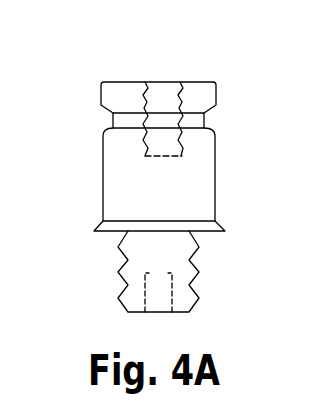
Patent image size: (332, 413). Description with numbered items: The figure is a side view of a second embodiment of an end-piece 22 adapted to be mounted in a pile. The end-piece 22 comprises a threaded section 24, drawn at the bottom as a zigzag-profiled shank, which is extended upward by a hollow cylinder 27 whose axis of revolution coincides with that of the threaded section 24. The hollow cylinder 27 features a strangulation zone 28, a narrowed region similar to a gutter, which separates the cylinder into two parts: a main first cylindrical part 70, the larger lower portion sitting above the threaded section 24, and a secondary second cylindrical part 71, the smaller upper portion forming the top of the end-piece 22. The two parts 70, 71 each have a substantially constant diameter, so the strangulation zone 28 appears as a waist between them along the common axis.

The end-piece 22 is at (199, 67).
The secondary second cylindrical part 71 is at (123, 97).
The strangulation zone 28 is at (113, 122).
The main first cylindrical part 70 is at (103, 185).
The hollow cylinder 27 is at (205, 146).
The threaded section 24 is at (120, 282).